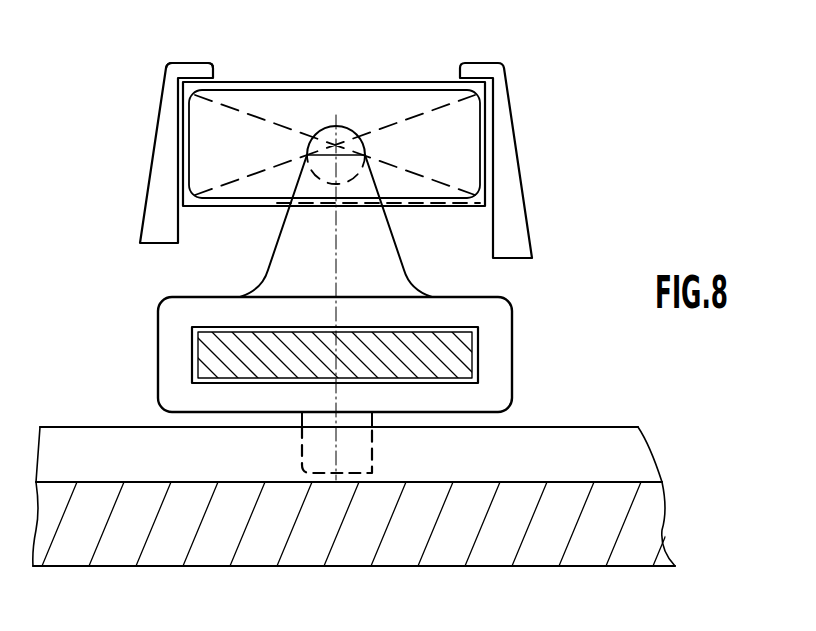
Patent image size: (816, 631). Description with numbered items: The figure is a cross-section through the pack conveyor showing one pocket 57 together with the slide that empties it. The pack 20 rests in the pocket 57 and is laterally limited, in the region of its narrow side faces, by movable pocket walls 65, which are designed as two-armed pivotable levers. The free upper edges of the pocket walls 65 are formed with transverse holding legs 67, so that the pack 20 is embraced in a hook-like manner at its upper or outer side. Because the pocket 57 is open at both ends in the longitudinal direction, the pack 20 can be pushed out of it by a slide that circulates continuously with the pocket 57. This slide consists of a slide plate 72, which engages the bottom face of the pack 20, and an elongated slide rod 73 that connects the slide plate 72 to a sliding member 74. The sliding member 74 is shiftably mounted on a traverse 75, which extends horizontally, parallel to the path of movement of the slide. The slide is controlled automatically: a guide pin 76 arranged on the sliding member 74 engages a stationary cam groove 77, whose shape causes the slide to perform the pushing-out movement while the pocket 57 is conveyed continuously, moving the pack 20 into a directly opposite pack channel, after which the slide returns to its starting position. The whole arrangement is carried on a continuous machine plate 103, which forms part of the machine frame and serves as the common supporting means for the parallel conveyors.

The pack 20 is at (420, 79).
The pocket 57 is at (562, 152).
The movable pocket wall 65 is at (155, 193).
The transverse holding leg 67 is at (165, 62).
The slide plate 72 is at (455, 133).
The slide rod 73 is at (318, 160).
The sliding member 74 is at (502, 318).
The traverse 75 is at (458, 362).
The guide pin 76 is at (393, 450).
The cam groove 77 is at (617, 453).
The machine plate 103 is at (631, 550).